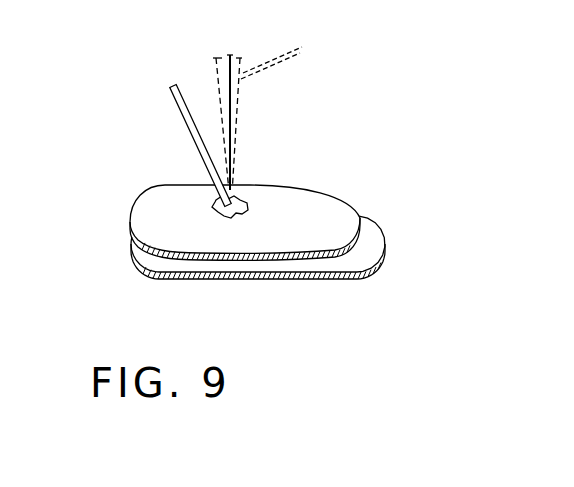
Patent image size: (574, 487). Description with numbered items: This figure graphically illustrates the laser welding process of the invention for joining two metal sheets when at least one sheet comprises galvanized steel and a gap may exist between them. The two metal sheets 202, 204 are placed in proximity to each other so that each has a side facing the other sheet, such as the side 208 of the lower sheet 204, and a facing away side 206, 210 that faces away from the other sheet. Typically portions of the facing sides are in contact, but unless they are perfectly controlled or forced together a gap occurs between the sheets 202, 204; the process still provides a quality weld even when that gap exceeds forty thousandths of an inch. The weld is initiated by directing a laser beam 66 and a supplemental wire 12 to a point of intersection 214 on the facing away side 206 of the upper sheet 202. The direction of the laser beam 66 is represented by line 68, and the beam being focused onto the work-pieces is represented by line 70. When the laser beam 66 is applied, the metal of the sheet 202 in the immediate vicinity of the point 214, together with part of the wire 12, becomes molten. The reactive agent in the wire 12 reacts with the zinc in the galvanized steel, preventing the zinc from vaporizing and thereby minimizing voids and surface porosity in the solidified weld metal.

The supplemental wire 12 is at (188, 130).
The laser beam 66 is at (243, 113).
The line representing direction of the laser beam 68 is at (232, 94).
The line representing focused laser beam 70 is at (286, 56).
The metal sheet 202 is at (238, 197).
The metal sheet 204 is at (300, 263).
The facing away side 206 is at (317, 210).
The side facing the other sheet 208 is at (368, 237).
The facing away side 210 is at (263, 282).
The point of intersection 214 is at (250, 203).